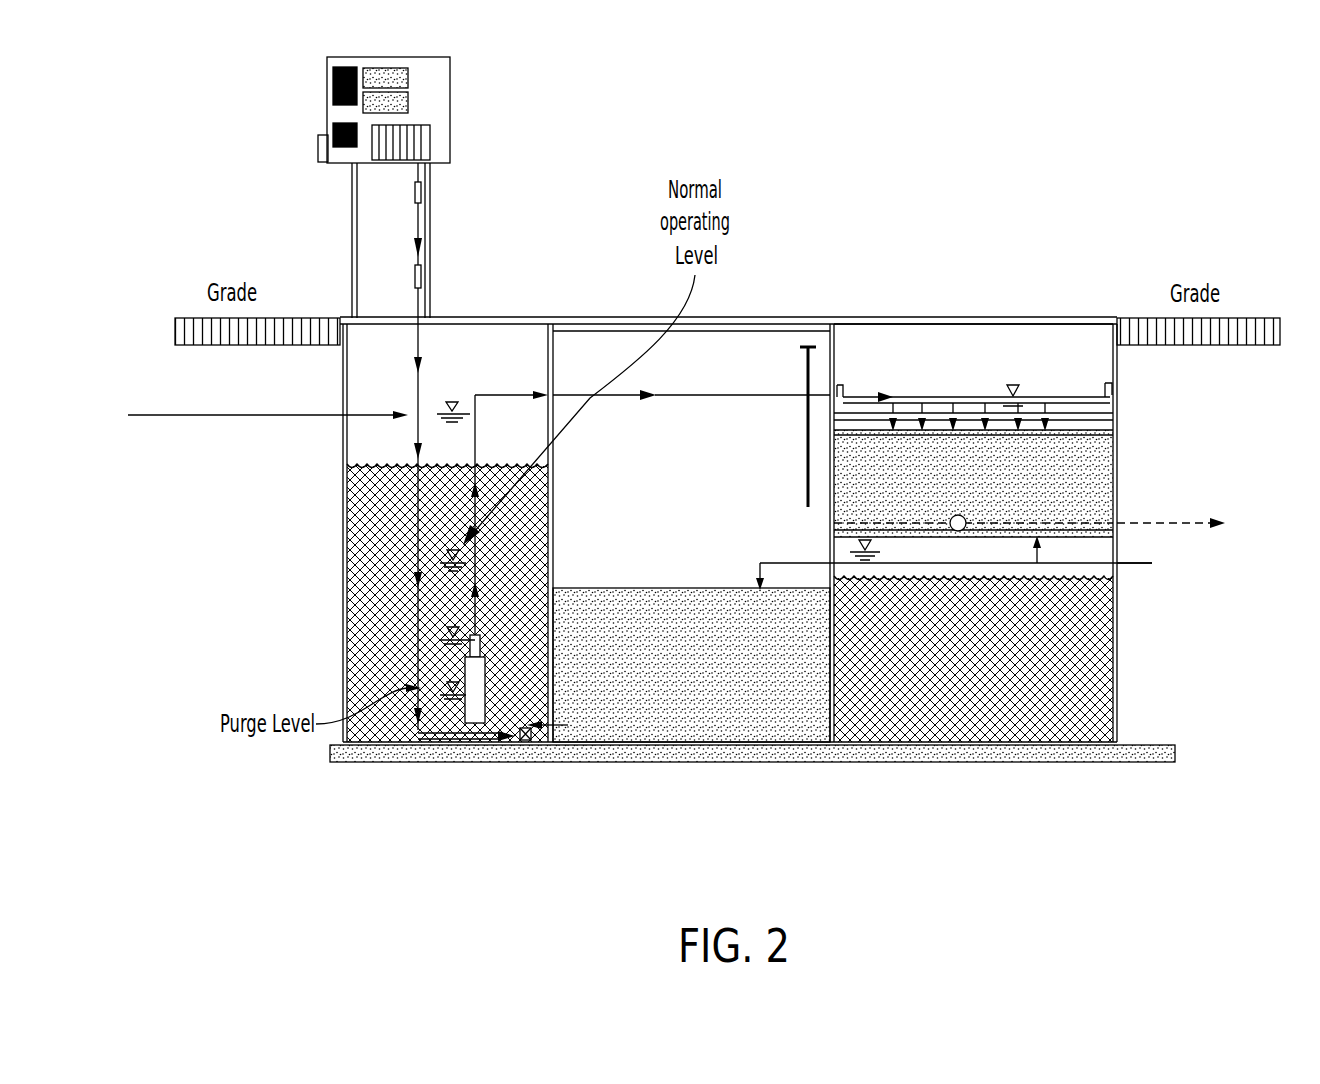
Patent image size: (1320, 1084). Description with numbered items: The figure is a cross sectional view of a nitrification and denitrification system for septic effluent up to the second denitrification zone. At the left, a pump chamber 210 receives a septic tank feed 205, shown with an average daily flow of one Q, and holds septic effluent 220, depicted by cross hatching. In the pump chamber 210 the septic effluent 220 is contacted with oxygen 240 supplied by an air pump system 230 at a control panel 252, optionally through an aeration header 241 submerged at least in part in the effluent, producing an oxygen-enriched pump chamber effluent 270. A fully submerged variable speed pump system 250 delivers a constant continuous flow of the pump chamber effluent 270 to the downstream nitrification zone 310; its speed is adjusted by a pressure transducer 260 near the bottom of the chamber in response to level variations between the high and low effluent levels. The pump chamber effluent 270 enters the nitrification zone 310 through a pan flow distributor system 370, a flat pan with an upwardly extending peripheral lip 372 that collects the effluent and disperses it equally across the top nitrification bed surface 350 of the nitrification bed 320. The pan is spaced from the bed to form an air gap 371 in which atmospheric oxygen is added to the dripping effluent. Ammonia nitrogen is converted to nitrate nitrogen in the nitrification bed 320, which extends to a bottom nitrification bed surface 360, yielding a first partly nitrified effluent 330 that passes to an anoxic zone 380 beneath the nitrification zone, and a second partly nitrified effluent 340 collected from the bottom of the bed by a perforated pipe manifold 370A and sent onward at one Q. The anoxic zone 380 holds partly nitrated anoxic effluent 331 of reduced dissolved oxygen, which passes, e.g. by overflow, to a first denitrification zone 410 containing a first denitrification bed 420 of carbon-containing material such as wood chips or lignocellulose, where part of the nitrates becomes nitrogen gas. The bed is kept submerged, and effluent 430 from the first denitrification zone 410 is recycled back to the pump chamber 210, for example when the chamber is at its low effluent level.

The septic tank feed 205 is at (145, 432).
The pump chamber 210 is at (318, 458).
The septic effluent 220 is at (392, 520).
The air pump system 230 is at (435, 143).
The oxygen 240 is at (422, 233).
The aeration header 241 is at (436, 741).
The variable speed pump system 250 is at (460, 667).
The control panel 252 is at (381, 178).
The pressure transducer 260 is at (520, 745).
The pump chamber effluent 270 is at (505, 378).
The nitrification zone 310 is at (1023, 325).
The nitrification bed 320 is at (1073, 413).
The first partly nitrified effluent 330 is at (875, 540).
The partly nitrated anoxic effluent 331 is at (797, 562).
The second partly nitrified effluent 340 is at (1167, 526).
The top nitrification bed surface 350 is at (884, 440).
The bottom nitrification bed surface 360 is at (1127, 563).
The pan flow distributor system 370 is at (1005, 336).
The perforated pipe manifold 370A is at (1108, 504).
The air gap 371 is at (1107, 425).
The upwardly extending peripheral lip 372 is at (1112, 396).
The anoxic zone 380 is at (1033, 687).
The first denitrification zone 410 is at (700, 555).
The first denitrification bed 420 is at (726, 710).
The effluent from first denitrification zone 430 is at (562, 738).